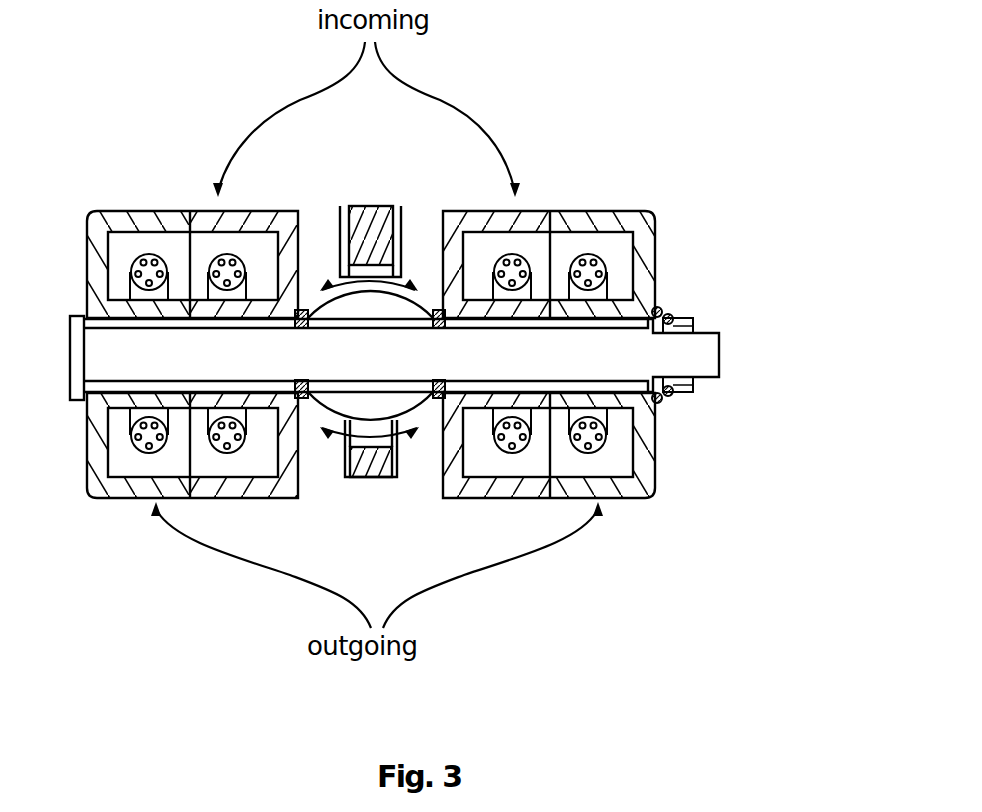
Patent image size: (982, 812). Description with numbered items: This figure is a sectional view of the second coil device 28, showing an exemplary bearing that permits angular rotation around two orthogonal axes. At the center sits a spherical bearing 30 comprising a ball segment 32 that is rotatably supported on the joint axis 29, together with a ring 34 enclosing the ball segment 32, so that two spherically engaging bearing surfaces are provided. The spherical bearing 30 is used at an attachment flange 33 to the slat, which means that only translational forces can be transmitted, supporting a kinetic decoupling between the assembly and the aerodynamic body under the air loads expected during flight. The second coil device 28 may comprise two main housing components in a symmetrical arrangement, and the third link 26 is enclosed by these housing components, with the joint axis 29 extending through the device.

The third link 26 is at (464, 212).
The second coil device 28 is at (704, 186).
The joint axis 29 is at (712, 352).
The spherical bearing 30 is at (380, 265).
The ball segment 32 is at (413, 397).
The attachment flange 33 is at (372, 212).
The ring 34 is at (383, 465).